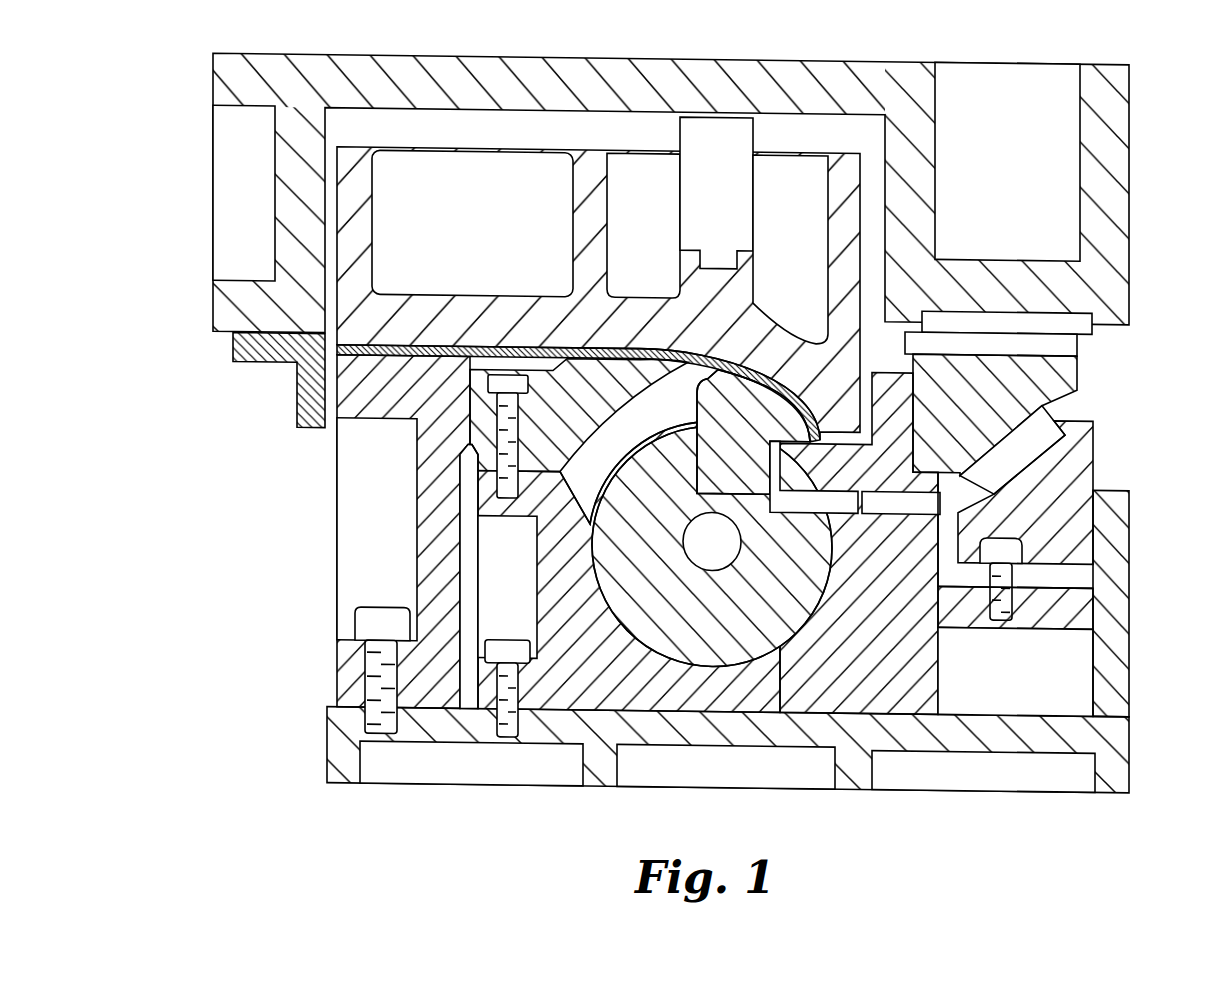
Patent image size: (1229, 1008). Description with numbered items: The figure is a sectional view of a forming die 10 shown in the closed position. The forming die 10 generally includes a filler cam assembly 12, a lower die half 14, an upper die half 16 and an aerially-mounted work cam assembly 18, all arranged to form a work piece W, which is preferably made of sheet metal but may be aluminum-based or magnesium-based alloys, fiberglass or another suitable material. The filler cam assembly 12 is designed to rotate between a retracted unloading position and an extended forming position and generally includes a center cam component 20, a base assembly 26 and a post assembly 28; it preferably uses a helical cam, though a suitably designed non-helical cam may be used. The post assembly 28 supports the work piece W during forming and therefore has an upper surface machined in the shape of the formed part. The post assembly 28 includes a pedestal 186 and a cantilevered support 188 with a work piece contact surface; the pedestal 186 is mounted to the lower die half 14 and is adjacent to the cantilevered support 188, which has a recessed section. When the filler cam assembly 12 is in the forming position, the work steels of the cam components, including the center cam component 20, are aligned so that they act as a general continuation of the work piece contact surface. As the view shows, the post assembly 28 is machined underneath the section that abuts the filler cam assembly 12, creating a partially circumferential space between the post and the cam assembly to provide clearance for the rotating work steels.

The forming die 10 is at (268, 576).
The filler cam assembly 12 is at (590, 532).
The lower die half 14 is at (335, 757).
The upper die half 16 is at (223, 314).
The work cam assembly 18 is at (1083, 362).
The center cam component 20 is at (773, 578).
The base assembly 26 is at (762, 703).
The post assembly 28 is at (392, 467).
The pedestal 186 is at (373, 544).
The cantilevered support 188 is at (569, 436).
The work piece W is at (734, 352).